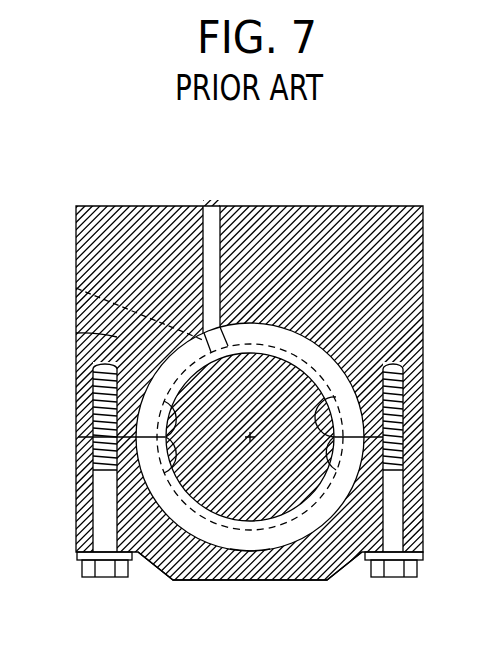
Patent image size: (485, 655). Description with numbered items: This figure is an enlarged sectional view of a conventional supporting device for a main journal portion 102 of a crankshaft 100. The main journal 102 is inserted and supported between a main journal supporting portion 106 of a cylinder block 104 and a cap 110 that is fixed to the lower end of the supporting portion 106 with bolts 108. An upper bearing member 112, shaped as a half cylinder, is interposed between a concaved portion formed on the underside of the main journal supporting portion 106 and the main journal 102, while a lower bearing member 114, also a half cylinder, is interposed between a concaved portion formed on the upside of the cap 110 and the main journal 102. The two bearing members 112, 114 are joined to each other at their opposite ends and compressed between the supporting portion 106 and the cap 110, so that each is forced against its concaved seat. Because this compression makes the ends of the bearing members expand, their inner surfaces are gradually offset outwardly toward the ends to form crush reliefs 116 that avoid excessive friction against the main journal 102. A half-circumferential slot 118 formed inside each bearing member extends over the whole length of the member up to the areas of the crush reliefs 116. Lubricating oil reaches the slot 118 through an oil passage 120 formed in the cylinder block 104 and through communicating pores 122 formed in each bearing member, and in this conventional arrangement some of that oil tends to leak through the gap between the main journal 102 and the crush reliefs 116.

The crankshaft 100 is at (290, 357).
The main journal portion 102 is at (292, 488).
The cylinder block 104 is at (69, 254).
The main journal supporting portion 106 is at (76, 333).
The bolts 108 is at (103, 579).
The cap 110 is at (169, 570).
The upper bearing member 112 is at (282, 333).
The lower bearing member 114 is at (241, 538).
The crush reliefs 116 is at (165, 402).
The half-circumferential slot 118 is at (265, 540).
The oil passage 120 is at (211, 206).
The communicating pores 122 is at (76, 288).